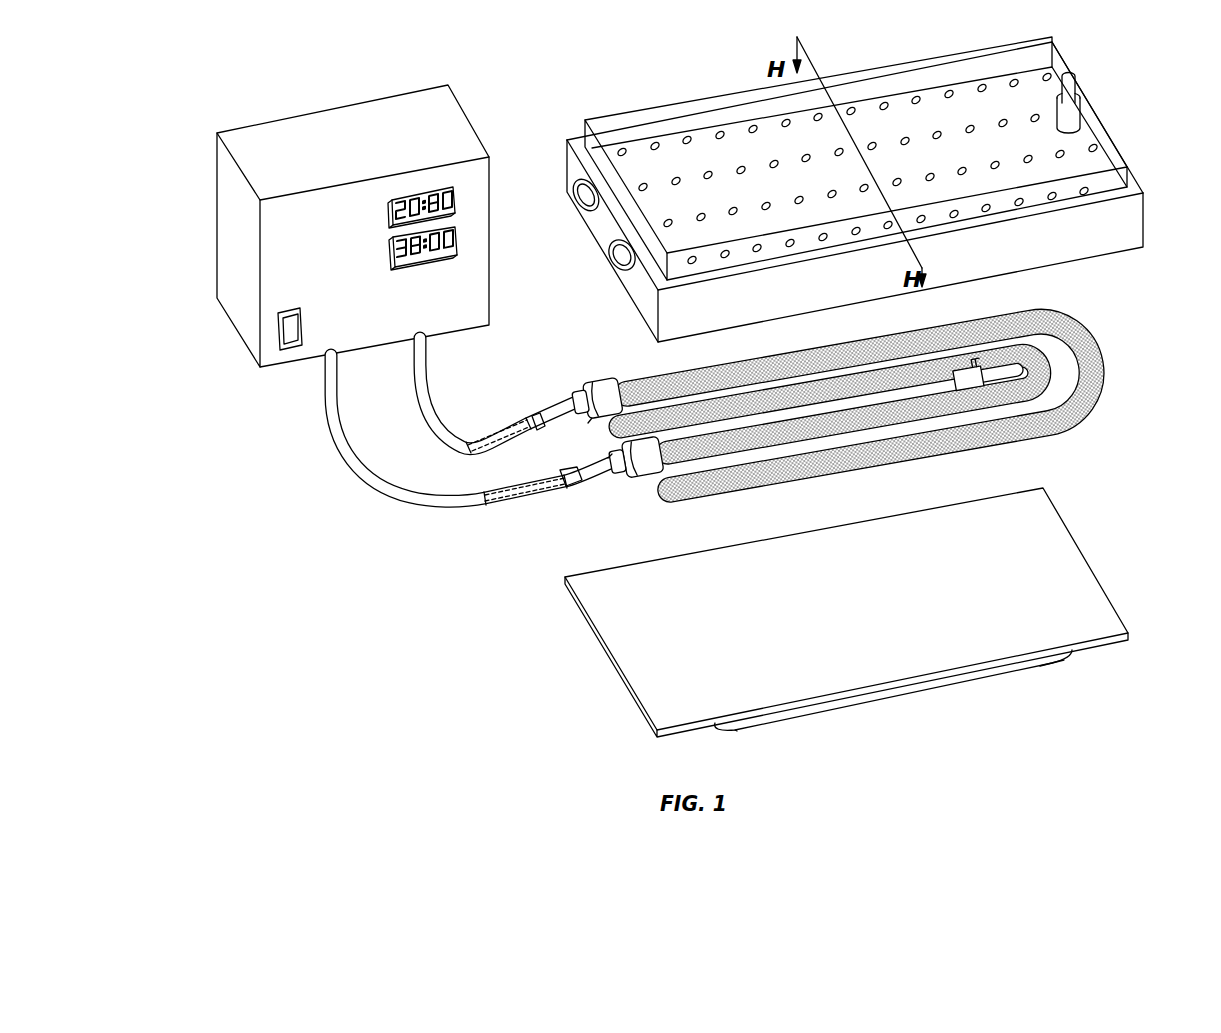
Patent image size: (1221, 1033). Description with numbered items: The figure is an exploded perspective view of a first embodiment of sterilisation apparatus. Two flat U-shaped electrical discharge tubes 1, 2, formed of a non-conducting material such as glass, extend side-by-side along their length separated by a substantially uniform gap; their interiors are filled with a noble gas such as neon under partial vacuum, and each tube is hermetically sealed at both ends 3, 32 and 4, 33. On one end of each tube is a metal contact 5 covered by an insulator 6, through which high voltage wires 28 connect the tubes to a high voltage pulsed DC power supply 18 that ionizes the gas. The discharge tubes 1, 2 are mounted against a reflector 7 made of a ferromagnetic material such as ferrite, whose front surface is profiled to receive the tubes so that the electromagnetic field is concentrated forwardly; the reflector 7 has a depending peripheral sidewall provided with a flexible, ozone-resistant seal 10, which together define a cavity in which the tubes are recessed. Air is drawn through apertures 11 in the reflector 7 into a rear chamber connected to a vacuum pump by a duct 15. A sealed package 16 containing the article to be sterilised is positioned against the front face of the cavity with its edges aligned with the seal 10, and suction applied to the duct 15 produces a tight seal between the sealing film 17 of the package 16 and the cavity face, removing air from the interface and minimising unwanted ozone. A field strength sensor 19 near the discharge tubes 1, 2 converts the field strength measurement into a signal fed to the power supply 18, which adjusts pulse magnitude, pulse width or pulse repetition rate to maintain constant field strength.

The electrical discharge tube 1 is at (860, 385).
The electrical discharge tube 2 is at (1057, 363).
The tube end 3 is at (620, 480).
The tube end 4 is at (602, 390).
The metal contact 5 is at (588, 416).
The insulator 6 is at (610, 463).
The reflector 7 is at (1107, 242).
The seal 10 is at (1143, 248).
The holes 11 is at (618, 152).
The duct 15 is at (1075, 112).
The sealed package 16 is at (1053, 662).
The sealing film 17 is at (1052, 537).
The high voltage power supply 18 is at (457, 118).
The field strength sensor 19 is at (983, 382).
The high voltage wires 28 is at (440, 500).
The tube end 32 is at (652, 507).
The tube end 33 is at (660, 417).